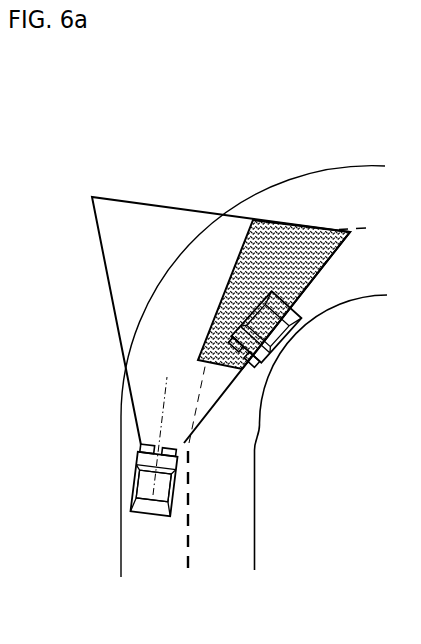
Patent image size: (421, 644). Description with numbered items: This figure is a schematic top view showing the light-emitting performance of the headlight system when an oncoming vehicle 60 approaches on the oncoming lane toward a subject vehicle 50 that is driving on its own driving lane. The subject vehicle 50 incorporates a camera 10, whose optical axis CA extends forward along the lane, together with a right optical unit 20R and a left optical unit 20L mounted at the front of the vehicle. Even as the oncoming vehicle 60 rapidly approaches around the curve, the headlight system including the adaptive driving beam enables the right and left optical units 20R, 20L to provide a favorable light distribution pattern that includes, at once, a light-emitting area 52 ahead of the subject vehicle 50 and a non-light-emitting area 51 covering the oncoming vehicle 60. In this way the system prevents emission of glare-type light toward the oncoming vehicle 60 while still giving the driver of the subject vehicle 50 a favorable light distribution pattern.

The camera 10 is at (160, 468).
The right optical unit 20R is at (147, 443).
The left optical unit 20L is at (174, 445).
The subject vehicle 50 is at (150, 482).
The non-light-emitting area 51 is at (282, 223).
The light-emitting area 52 is at (170, 209).
The oncoming vehicle 60 is at (283, 342).
The optical axis CA is at (165, 427).